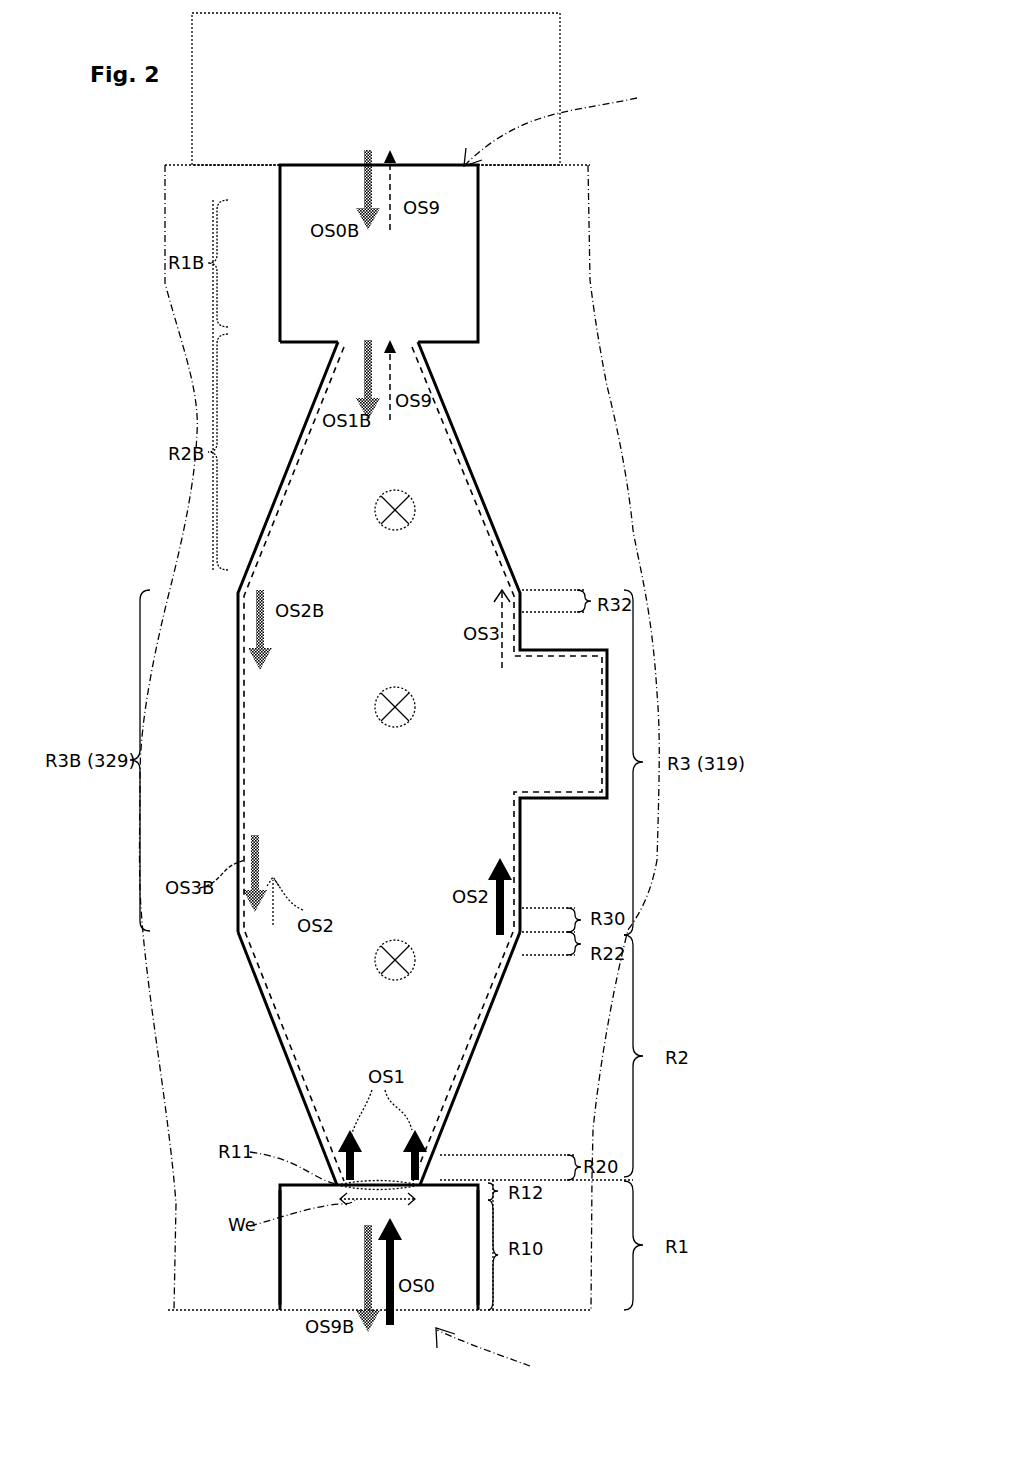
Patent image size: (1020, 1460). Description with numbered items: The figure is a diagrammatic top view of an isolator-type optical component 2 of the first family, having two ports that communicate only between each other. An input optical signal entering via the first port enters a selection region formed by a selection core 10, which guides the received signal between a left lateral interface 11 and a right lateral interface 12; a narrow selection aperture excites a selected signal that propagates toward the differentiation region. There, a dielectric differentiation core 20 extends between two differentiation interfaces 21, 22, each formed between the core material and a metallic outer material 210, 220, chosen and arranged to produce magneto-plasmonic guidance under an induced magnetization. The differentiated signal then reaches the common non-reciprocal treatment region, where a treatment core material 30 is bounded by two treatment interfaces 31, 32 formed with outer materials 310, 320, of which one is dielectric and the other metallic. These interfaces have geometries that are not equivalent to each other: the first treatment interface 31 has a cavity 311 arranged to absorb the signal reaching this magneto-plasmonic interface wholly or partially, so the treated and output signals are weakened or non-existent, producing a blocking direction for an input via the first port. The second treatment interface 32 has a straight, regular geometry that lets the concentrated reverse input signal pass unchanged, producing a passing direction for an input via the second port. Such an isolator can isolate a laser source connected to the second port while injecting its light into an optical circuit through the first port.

The component 2 is at (694, 497).
The selection core 10 is at (379, 1247).
The left lateral interface 11 is at (478, 1258).
The right lateral interface 12 is at (280, 1255).
The differentiation core 20 is at (395, 979).
The differentiation interface 21 is at (470, 1060).
The differentiation interface 22 is at (284, 1040).
The treatment core material 30 is at (395, 635).
The first treatment interface 31 is at (522, 838).
The second treatment interface 32 is at (236, 796).
The metallic outer material 210 is at (525, 1010).
The metallic outer material 220 is at (250, 1010).
The outer material 310 is at (565, 765).
The cavity 311 is at (575, 706).
The outer material 320 is at (195, 765).